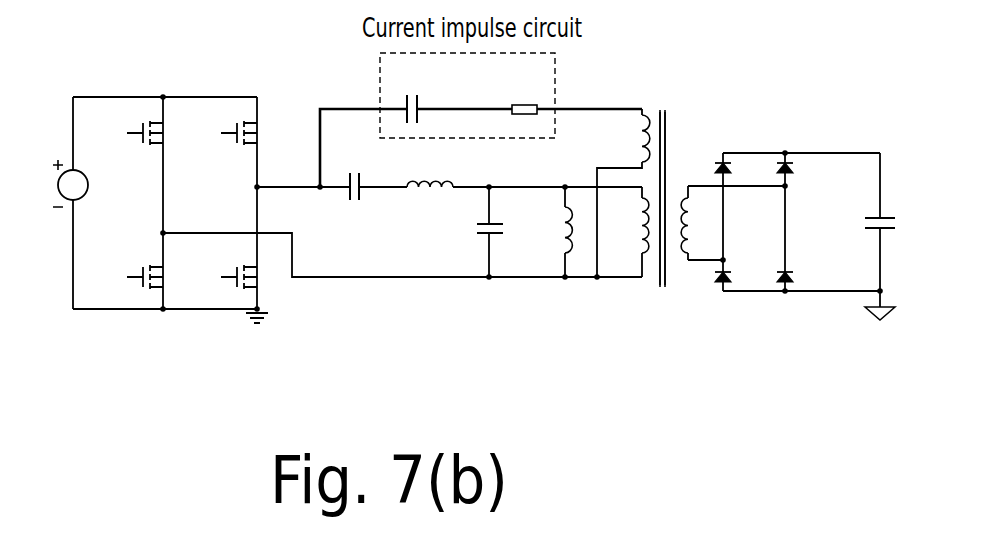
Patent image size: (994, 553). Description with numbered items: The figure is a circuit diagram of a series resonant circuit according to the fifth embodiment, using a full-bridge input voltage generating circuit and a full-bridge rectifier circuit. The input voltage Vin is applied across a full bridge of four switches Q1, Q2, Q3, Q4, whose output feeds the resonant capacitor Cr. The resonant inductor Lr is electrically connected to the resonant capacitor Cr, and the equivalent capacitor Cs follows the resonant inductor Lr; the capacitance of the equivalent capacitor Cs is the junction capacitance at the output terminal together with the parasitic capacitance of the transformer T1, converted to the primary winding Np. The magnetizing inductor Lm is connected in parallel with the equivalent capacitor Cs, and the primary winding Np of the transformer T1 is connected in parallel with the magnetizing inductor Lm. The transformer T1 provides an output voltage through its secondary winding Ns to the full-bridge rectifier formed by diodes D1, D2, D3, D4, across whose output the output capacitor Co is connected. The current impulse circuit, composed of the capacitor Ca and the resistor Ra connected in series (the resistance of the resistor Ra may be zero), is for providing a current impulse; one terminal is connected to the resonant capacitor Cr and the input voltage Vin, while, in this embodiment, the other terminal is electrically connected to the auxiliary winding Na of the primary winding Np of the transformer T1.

The input voltage Vin is at (53, 183).
The switching transistor Q1 is at (136, 129).
The switching transistor Q2 is at (136, 273).
The switching transistor Q3 is at (230, 129).
The switching transistor Q4 is at (230, 273).
The capacitor Ca is at (409, 96).
The resistor Ra is at (524, 91).
The resonant capacitor Cr is at (351, 197).
The resonant inductor Lr is at (430, 202).
The equivalent capacitor Cs is at (482, 236).
The magnetizing inductor Lm is at (556, 230).
The transformer T1 is at (660, 182).
The auxiliary winding Na is at (633, 135).
The primary winding Np is at (633, 225).
The secondary winding Ns is at (696, 225).
The rectifier diode D1 is at (721, 152).
The rectifier diode D2 is at (721, 297).
The rectifier diode D3 is at (783, 152).
The rectifier diode D4 is at (783, 297).
The output capacitor Co is at (885, 236).